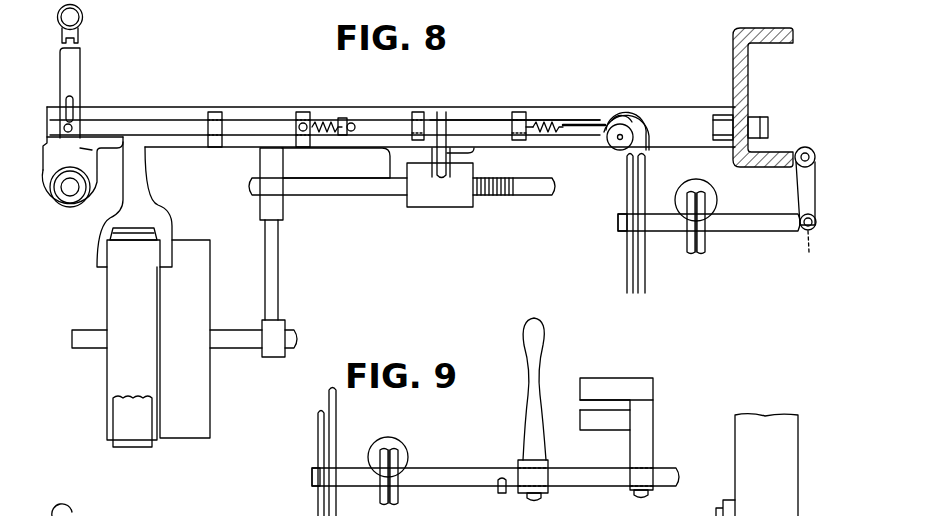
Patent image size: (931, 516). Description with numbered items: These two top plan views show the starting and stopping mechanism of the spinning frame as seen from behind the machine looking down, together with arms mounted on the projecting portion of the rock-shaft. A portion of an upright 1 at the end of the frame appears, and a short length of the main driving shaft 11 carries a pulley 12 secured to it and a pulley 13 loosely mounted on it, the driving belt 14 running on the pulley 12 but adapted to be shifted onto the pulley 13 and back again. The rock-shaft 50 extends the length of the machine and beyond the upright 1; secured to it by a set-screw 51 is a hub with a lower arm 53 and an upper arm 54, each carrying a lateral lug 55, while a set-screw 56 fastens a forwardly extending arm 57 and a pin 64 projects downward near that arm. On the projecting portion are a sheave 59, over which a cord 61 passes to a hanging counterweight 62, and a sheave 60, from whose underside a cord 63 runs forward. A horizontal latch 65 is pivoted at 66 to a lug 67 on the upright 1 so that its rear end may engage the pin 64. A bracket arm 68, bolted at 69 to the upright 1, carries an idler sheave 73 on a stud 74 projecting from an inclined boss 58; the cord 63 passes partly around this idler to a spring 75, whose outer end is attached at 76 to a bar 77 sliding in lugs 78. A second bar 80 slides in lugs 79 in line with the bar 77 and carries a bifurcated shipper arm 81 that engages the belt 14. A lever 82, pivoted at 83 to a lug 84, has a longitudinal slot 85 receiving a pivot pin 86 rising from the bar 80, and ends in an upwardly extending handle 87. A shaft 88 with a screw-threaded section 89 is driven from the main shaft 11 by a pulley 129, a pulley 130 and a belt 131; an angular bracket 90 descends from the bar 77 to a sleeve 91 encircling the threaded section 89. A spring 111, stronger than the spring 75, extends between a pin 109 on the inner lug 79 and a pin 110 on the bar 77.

In FIG. 8, the upright 1 is at (733, 68).
In FIG. 8, the main driving shaft 11 is at (83, 346).
In FIG. 8, the pulley 12 is at (107, 391).
In FIG. 8, the pulley 13 is at (204, 398).
In FIG. 8, the driving belt 14 is at (150, 235).
In FIG. 8, the rock-shaft 50 is at (782, 229).
In FIG. 9, the rock-shaft 50 is at (470, 472).
In FIG. 9, the set-screw 51 is at (645, 496).
In FIG. 9, the lower arm 53 is at (653, 398).
In FIG. 9, the upper arm 54 is at (650, 440).
In FIG. 9, the lug 55 is at (578, 402).
In FIG. 9, the set-screw 56 is at (543, 498).
In FIG. 9, the arm 57 is at (528, 372).
In FIG. 8, the inclined boss 58 is at (622, 118).
In FIG. 8, the sheave 59 is at (706, 200).
In FIG. 9, the sheave 59 is at (400, 503).
In FIG. 8, the sheave 60 is at (628, 266).
In FIG. 9, the sheave 60 is at (320, 445).
In FIG. 8, the cord 61 is at (694, 193).
In FIG. 9, the cord 61 is at (382, 488).
In FIG. 8, the counterweight 62 is at (703, 240).
In FIG. 9, the counterweight 62 is at (386, 441).
In FIG. 8, the cord 63 is at (590, 123).
In FIG. 9, the cord 63 is at (328, 397).
In FIG. 8, the pin 64 is at (811, 243).
In FIG. 9, the pin 64 is at (501, 497).
In FIG. 8, the latch 65 is at (798, 194).
In FIG. 8, the pivot 66 is at (806, 147).
In FIG. 8, the lug 67 is at (798, 152).
In FIG. 8, the bracket arm 68 is at (395, 107).
In FIG. 8, the bolt 69 is at (766, 127).
In FIG. 8, the idler sheave 73 is at (635, 121).
In FIG. 8, the stud 74 is at (615, 143).
In FIG. 8, the spring 75 is at (549, 120).
In FIG. 8, the spring attachment 76 is at (530, 120).
In FIG. 8, the bar 77 is at (470, 122).
In FIG. 8, the lugs 78 is at (420, 112).
In FIG. 8, the lugs 79 is at (215, 125).
In FIG. 8, the bar 80 is at (253, 125).
In FIG. 8, the bifurcated shipper arm 81 is at (140, 206).
In FIG. 8, the lever 82 is at (72, 55).
In FIG. 8, the pivot 83 is at (70, 193).
In FIG. 8, the lug 84 is at (86, 172).
In FIG. 8, the longitudinal slot 85 is at (72, 106).
In FIG. 8, the pivot pin 86 is at (73, 126).
In FIG. 8, the handle 87 is at (83, 15).
In FIG. 9, the handle 87 is at (72, 508).
In FIG. 8, the shaft 88 is at (546, 196).
In FIG. 8, the screw-threaded section 89 is at (495, 200).
In FIG. 8, the angular bracket 90 is at (470, 153).
In FIG. 8, the sleeve 91 is at (425, 200).
In FIG. 8, the pin 109 is at (320, 122).
In FIG. 8, the pin 110 is at (354, 123).
In FIG. 8, the spring 111 is at (308, 124).
In FIG. 8, the pulley 129 is at (285, 323).
In FIG. 8, the pulley 130 is at (283, 222).
In FIG. 8, the belt 131 is at (268, 276).